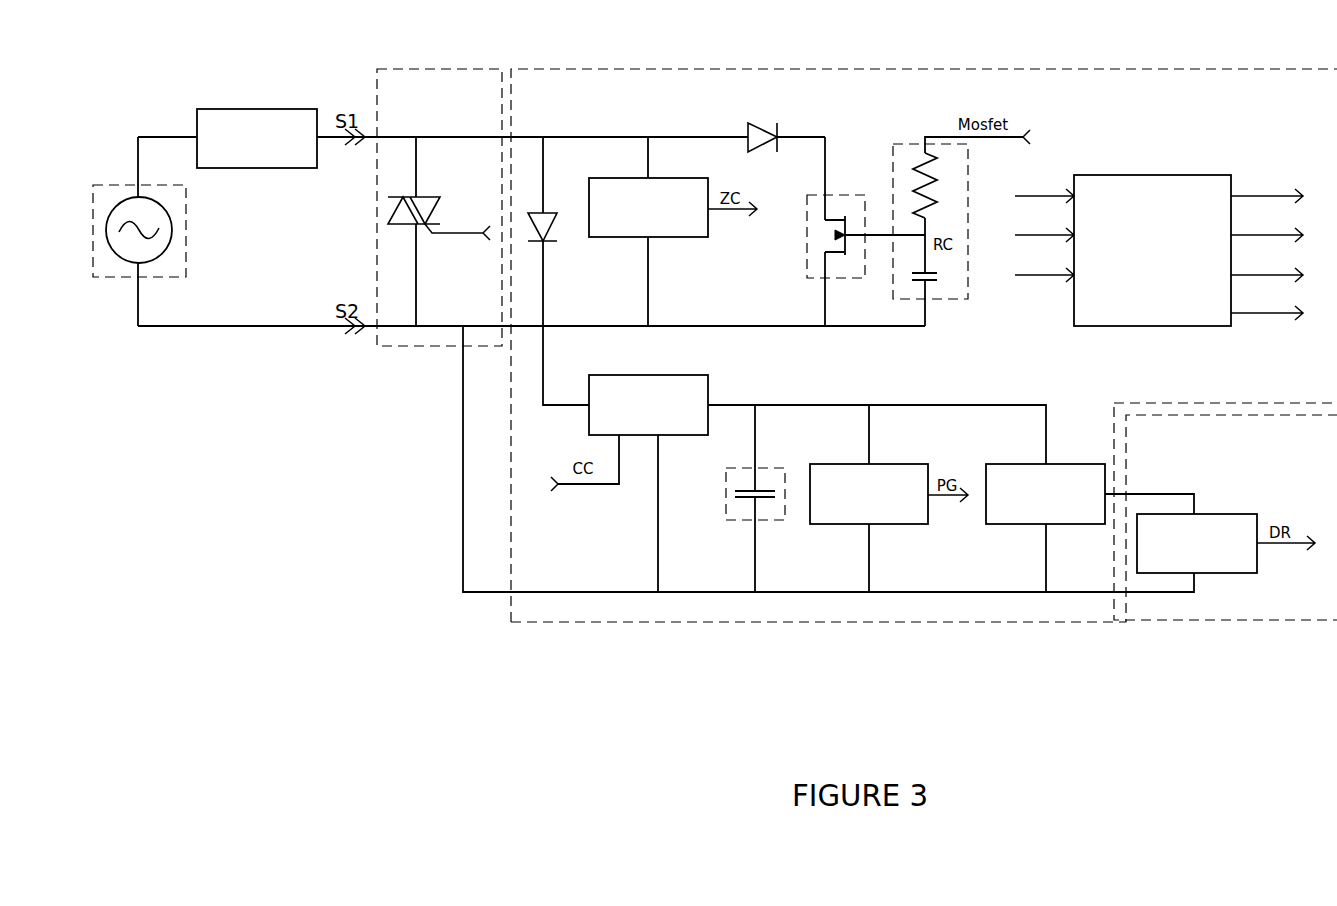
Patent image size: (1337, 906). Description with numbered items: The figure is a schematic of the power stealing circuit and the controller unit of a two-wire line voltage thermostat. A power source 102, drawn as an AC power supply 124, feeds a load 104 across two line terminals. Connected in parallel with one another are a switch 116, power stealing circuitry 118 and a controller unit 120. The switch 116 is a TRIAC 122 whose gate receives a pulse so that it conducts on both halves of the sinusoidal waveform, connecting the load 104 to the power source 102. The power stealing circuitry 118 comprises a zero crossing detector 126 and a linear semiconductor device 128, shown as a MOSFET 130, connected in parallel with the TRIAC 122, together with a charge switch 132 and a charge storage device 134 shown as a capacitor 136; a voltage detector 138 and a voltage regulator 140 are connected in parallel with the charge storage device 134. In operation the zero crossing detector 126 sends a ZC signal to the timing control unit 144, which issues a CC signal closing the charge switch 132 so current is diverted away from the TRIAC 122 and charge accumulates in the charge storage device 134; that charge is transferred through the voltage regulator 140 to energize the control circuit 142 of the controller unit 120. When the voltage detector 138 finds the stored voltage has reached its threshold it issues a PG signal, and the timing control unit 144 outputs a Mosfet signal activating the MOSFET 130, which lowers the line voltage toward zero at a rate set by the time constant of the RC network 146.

The power source 102 is at (186, 213).
The load 104 is at (253, 100).
The switch 116 is at (428, 68).
The power stealing circuitry 118 is at (880, 62).
The controller unit 120 is at (1268, 625).
The triode alternating current switch (TRIAC) 122 is at (387, 211).
The AC power supply 124 is at (157, 247).
The zero crossing detector 126 is at (667, 183).
The linear semiconductor device 128 is at (840, 194).
The linear MOSFET 130 is at (815, 238).
The charge switch 132 is at (668, 385).
The charge storage device 134 is at (733, 468).
The capacitor 136 is at (743, 500).
The voltage detector 138 is at (913, 473).
The voltage regulator 140 is at (763, 120).
The control circuit 142 is at (553, 222).
The timing control unit 144 is at (1167, 326).
The resistor-capacitor (RC) network 146 is at (938, 300).